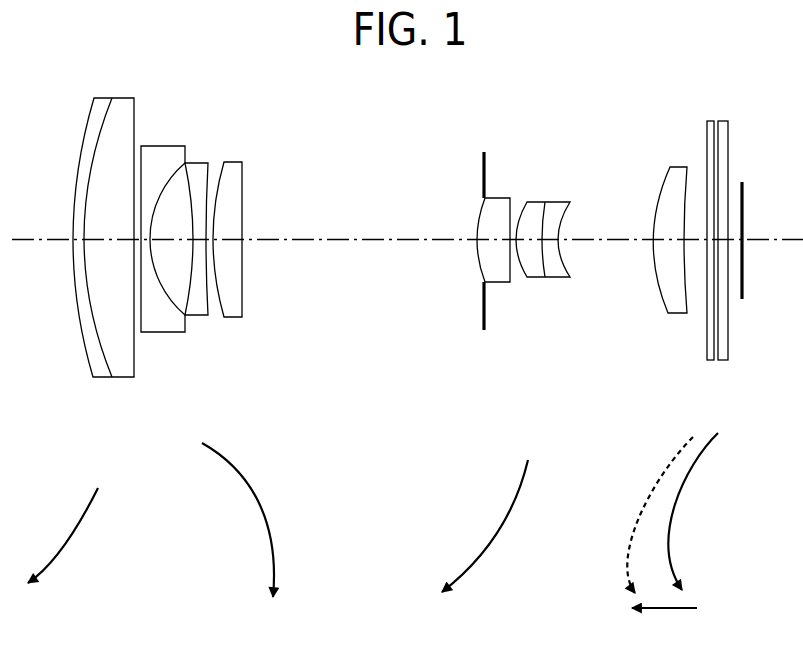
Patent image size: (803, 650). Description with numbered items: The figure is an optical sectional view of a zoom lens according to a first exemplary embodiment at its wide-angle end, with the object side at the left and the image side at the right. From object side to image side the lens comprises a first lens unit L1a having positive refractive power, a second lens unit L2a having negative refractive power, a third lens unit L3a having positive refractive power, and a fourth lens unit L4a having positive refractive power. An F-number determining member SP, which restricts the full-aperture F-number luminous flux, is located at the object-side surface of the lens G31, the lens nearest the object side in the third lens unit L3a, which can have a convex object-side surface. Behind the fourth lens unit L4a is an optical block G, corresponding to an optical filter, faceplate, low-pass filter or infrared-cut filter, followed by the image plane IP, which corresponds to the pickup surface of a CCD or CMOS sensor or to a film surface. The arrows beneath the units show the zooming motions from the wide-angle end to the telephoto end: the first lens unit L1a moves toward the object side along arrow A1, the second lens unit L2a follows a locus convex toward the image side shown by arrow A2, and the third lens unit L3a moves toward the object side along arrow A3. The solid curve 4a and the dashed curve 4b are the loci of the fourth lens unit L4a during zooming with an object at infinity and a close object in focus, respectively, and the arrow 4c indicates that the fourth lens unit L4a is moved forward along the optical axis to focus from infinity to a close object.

The first lens unit L1a is at (53, 408).
The second lens unit L2a is at (140, 380).
The third lens unit L3a is at (532, 303).
The fourth lens unit L4a is at (647, 382).
The F-number determining member SP is at (484, 170).
The lens G31 is at (497, 200).
The optical block G is at (697, 118).
The image plane IP is at (743, 215).
The movement of first lens unit A1 is at (70, 535).
The locus of second lens unit A2 is at (254, 520).
The movement of third lens unit A3 is at (489, 526).
The solid curve 4a is at (693, 511).
The dashed curve 4b is at (645, 515).
The arrow 4c is at (664, 628).